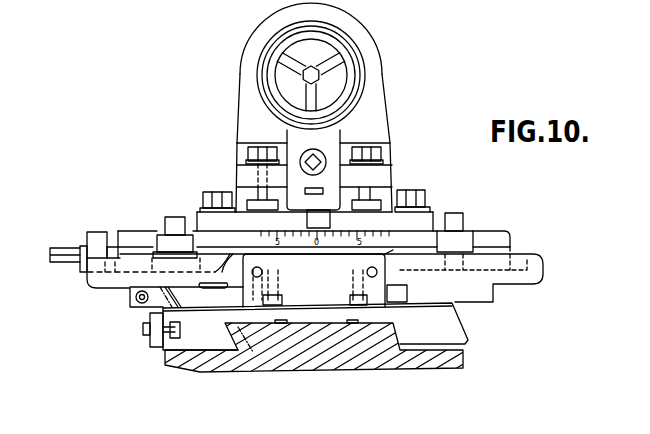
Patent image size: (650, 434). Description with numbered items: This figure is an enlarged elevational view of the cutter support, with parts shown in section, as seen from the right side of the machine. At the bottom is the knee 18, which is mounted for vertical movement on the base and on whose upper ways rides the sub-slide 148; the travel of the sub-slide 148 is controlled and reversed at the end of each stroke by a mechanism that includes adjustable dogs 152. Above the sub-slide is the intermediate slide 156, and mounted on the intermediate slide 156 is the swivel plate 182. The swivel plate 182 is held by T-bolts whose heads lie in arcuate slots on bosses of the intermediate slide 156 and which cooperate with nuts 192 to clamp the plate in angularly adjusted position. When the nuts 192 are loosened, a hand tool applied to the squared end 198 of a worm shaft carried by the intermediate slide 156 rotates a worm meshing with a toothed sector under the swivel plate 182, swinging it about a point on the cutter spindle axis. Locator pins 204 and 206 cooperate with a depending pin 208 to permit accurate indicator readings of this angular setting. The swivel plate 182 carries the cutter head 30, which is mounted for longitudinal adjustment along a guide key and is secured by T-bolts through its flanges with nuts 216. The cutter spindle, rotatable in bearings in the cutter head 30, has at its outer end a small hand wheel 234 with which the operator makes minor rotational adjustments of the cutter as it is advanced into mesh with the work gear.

The cutter head 30 is at (376, 44).
The hand wheel 234 is at (352, 79).
The nuts 216 is at (392, 149).
The swivel plate 182 is at (392, 172).
The nuts 192 is at (425, 197).
The locator pin 204 is at (455, 213).
The locator pin 206 is at (176, 217).
The squared end of shaft 198 is at (64, 247).
The depending pin 208 is at (331, 218).
The intermediate slide 156 is at (500, 288).
The sub-slide 148 is at (467, 325).
The knee 18 is at (398, 368).
The adjustable dogs 152 is at (153, 348).